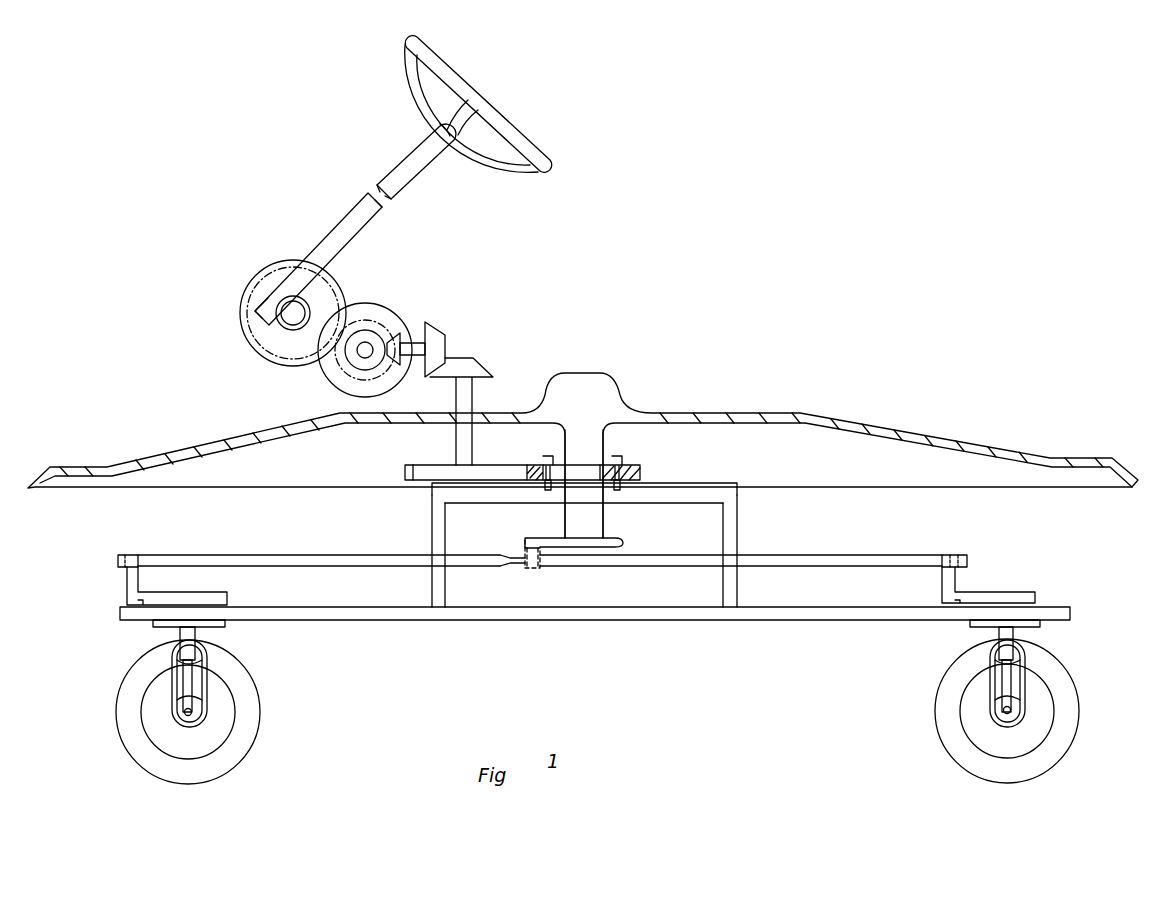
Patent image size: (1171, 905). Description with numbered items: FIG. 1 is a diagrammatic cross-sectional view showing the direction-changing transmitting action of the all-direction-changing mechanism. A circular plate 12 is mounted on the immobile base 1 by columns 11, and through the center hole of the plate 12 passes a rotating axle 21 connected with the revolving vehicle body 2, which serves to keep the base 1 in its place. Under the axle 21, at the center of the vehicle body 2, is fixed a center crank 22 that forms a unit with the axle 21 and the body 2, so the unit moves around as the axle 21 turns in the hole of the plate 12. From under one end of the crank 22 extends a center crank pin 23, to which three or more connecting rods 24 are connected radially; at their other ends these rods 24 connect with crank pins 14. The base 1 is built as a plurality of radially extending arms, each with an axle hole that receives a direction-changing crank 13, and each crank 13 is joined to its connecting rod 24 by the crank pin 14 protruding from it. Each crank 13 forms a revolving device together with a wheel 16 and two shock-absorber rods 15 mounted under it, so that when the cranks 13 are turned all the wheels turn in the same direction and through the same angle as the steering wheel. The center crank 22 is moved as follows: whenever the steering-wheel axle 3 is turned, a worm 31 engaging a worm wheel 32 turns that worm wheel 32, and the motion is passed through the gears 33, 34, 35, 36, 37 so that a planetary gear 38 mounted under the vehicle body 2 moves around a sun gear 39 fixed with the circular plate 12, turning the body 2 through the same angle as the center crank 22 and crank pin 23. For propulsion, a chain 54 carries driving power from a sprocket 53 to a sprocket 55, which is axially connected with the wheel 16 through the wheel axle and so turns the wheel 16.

The immobile base 1 is at (333, 618).
The revolving vehicle body 2 is at (995, 447).
The steering-wheel axle 3 is at (340, 227).
The columns 11 is at (428, 588).
The circular plate 12 is at (697, 482).
The direction-changing crank 13 is at (127, 590).
The crank pin 14 is at (128, 555).
The shock-absorber rods 15 is at (180, 632).
The wheel 16 is at (243, 747).
The rotating axle 21 is at (588, 452).
The center crank 22 is at (617, 545).
The center crank pin 23 is at (525, 543).
The connecting rods 24 is at (265, 557).
The worm 31 is at (290, 273).
The worm wheel 32 is at (288, 323).
The gear 33 is at (262, 268).
The gear 34 is at (362, 307).
The gear 35 is at (410, 343).
The gear 36 is at (428, 333).
The gear 37 is at (468, 360).
The planetary gear 38 is at (420, 480).
The sun gear 39 is at (640, 482).
The sprocket 53 is at (178, 653).
The chain 54 is at (207, 683).
The sprocket 55 is at (182, 720).